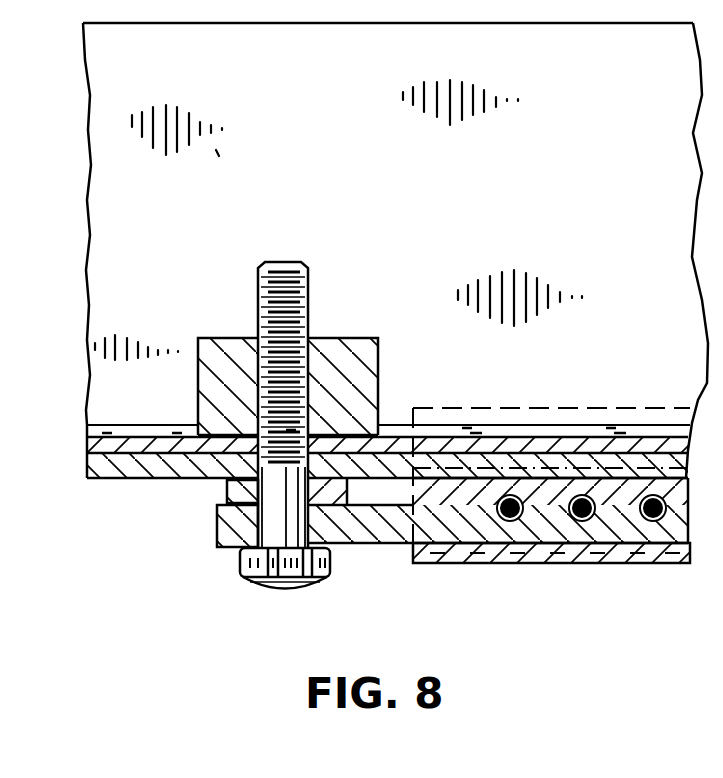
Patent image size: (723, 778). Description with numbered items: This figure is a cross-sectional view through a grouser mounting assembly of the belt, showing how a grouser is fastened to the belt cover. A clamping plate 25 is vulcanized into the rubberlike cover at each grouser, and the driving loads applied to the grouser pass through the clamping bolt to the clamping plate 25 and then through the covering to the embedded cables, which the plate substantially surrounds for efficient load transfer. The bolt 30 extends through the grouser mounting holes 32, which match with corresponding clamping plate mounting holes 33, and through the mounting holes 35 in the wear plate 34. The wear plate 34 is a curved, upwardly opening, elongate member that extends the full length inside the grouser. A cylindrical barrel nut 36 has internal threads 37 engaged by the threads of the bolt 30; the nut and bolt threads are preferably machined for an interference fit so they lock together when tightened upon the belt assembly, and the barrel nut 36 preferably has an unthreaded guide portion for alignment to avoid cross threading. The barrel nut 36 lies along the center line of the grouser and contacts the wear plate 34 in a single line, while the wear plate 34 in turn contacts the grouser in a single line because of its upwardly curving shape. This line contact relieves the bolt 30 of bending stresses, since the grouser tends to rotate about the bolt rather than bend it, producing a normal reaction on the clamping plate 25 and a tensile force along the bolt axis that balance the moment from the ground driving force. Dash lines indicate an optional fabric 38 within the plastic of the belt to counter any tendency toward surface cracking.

The clamping plate 25 is at (389, 532).
The bolt 30 is at (330, 573).
The grouser mounting holes 32 is at (310, 437).
The clamping plate mounting holes 33 is at (278, 583).
The wear plate 34 is at (157, 427).
The mounting holes 35 is at (278, 448).
The barrel nut 36 is at (358, 357).
The internal threads 37 is at (302, 363).
The heating element assembly 38 is at (565, 458).